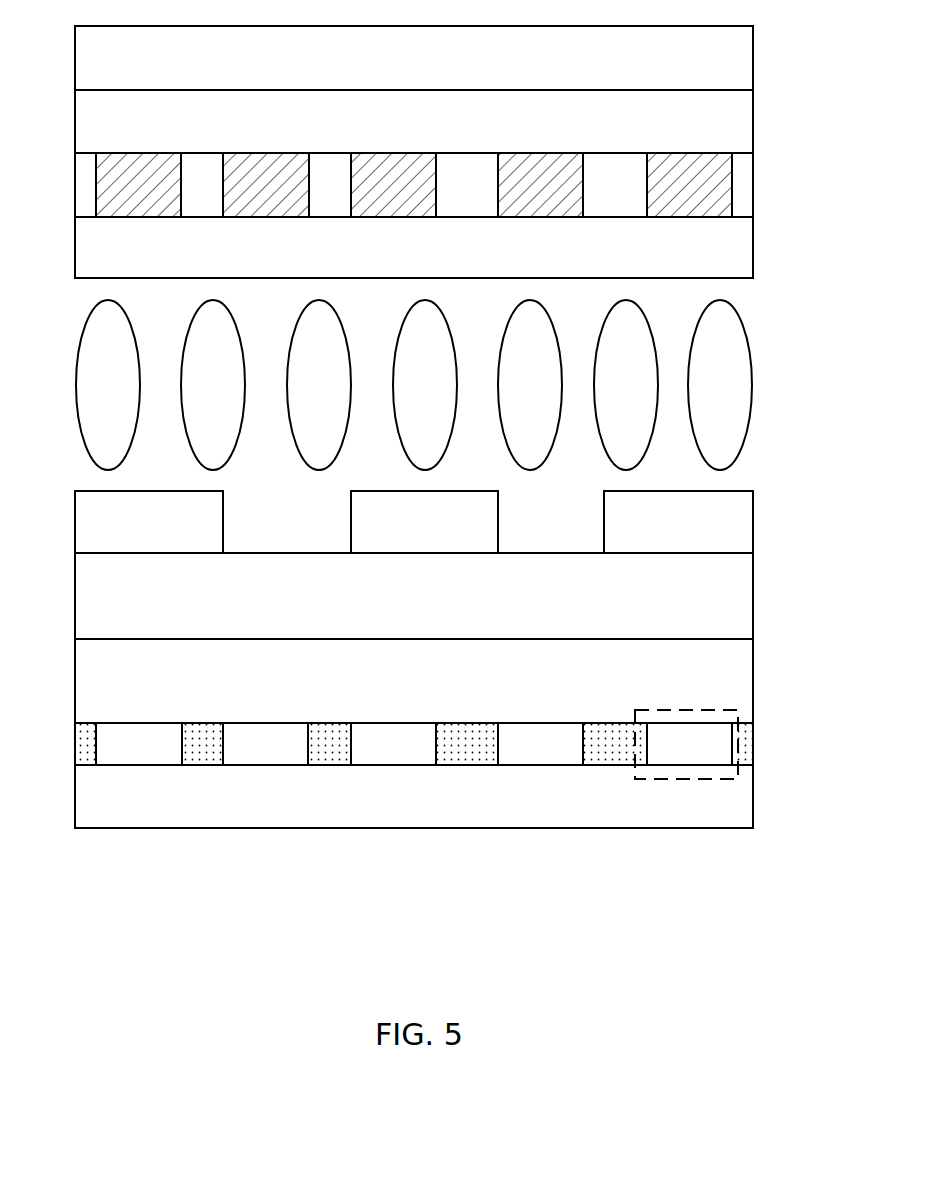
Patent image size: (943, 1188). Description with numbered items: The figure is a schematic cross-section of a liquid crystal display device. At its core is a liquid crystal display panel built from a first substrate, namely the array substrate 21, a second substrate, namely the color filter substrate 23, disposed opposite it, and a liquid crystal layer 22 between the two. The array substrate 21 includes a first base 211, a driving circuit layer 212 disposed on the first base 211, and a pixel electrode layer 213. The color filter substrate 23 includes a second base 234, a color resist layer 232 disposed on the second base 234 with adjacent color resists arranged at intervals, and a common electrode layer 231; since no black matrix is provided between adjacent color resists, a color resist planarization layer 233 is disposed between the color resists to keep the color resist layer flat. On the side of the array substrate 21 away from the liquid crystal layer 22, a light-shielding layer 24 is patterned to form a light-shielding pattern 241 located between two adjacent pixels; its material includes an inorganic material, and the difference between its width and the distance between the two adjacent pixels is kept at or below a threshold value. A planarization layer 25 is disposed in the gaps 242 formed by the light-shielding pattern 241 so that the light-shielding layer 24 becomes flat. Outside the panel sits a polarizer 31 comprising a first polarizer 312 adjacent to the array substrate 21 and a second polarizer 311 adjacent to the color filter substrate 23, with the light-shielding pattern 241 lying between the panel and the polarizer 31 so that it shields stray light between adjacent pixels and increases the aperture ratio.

The array substrate 21 is at (436, 737).
The first base 211 is at (728, 697).
The driving circuit layer 212 is at (728, 618).
The pixel electrode layer 213 is at (725, 533).
The liquid crystal layer 22 is at (730, 403).
The color filter substrate 23 is at (428, 537).
The common electrode layer 231 is at (732, 257).
The color resist layer 232 is at (723, 192).
The color resist planarization layer 233 is at (85, 190).
The second base 234 is at (732, 118).
The light-shielding layer 24 is at (462, 844).
The light-shielding pattern 241 is at (737, 740).
The gaps 242 is at (738, 777).
The planarization layer 25 is at (118, 749).
The polarizer 31 is at (465, 502).
The second polarizer 311 is at (732, 68).
The first polarizer 312 is at (730, 813).